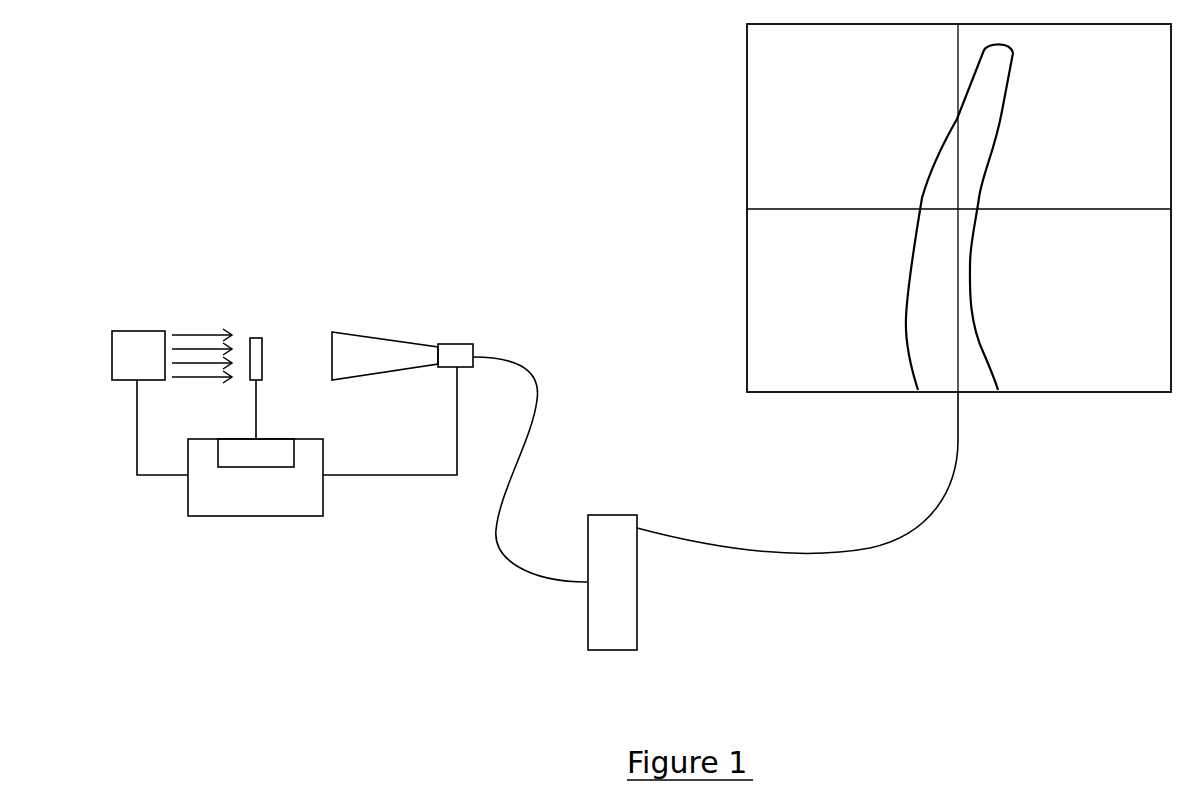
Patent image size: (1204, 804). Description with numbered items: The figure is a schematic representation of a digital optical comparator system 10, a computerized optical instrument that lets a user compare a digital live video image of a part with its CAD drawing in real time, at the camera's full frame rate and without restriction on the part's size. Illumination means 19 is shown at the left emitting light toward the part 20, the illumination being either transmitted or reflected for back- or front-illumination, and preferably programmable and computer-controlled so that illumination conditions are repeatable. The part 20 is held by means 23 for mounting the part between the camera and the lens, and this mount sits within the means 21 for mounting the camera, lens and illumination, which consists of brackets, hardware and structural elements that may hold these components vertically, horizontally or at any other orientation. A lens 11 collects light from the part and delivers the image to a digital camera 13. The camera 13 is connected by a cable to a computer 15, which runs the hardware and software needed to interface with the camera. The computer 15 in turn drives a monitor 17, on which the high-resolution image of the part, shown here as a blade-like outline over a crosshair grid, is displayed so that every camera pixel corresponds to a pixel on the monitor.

The inspection system 10 is at (496, 716).
The lens 11 is at (392, 340).
The digital camera 13 is at (473, 344).
The computer 15 is at (637, 607).
The monitor 17 is at (747, 116).
The illumination means 19 is at (112, 355).
The part 20 is at (258, 337).
The means for mounting the camera, lens and illumination 21 is at (260, 516).
The means for mounting the part 23 is at (287, 467).